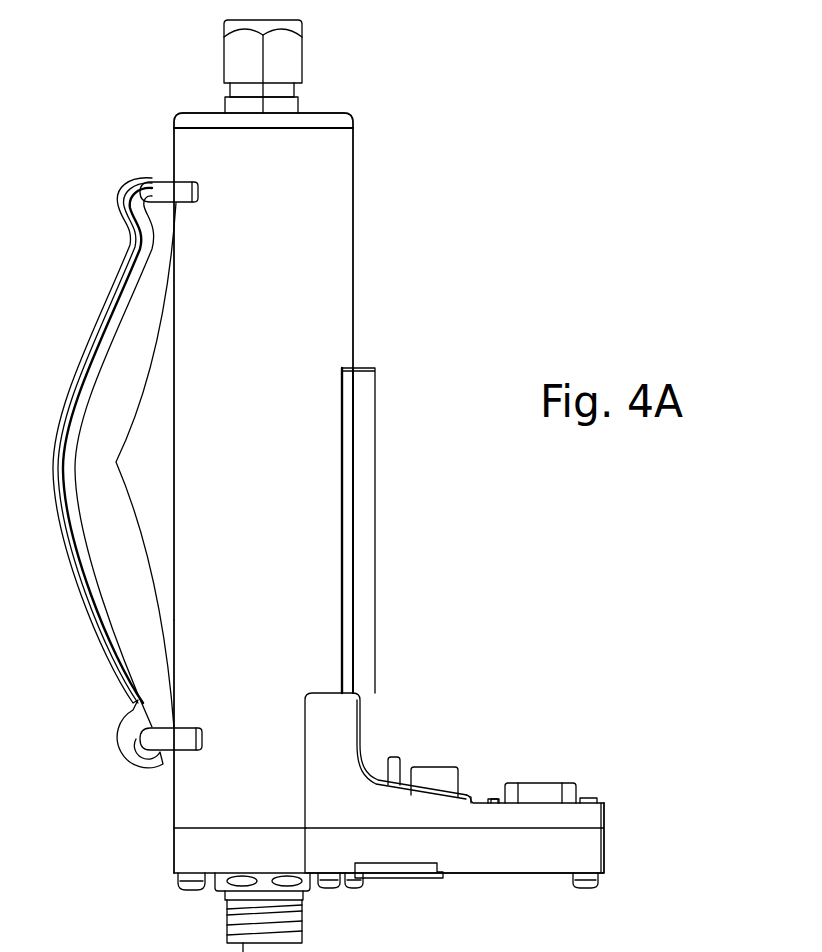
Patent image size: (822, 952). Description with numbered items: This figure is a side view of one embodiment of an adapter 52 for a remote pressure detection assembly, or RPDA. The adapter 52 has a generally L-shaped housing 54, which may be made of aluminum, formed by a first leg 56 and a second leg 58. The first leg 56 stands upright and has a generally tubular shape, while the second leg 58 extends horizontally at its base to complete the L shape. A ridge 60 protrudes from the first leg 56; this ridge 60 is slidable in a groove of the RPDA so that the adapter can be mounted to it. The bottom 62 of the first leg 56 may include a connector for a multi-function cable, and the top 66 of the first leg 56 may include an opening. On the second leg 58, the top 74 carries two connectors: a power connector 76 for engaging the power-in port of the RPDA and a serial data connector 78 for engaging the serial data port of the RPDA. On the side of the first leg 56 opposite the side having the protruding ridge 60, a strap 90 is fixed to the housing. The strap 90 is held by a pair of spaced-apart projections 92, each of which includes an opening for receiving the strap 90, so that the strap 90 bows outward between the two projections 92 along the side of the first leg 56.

The adapter 52 is at (427, 141).
The housing 54 is at (213, 785).
The first leg 56 is at (330, 246).
The second leg 58 is at (520, 852).
The ridge 60 is at (363, 460).
The bottom 62 is at (178, 885).
The top 66 is at (322, 115).
The top 74 is at (478, 801).
The power connector 76 is at (428, 770).
The serial data connector 78 is at (540, 787).
The strap 90 is at (98, 620).
The spaced-apart projections 92 is at (116, 462).